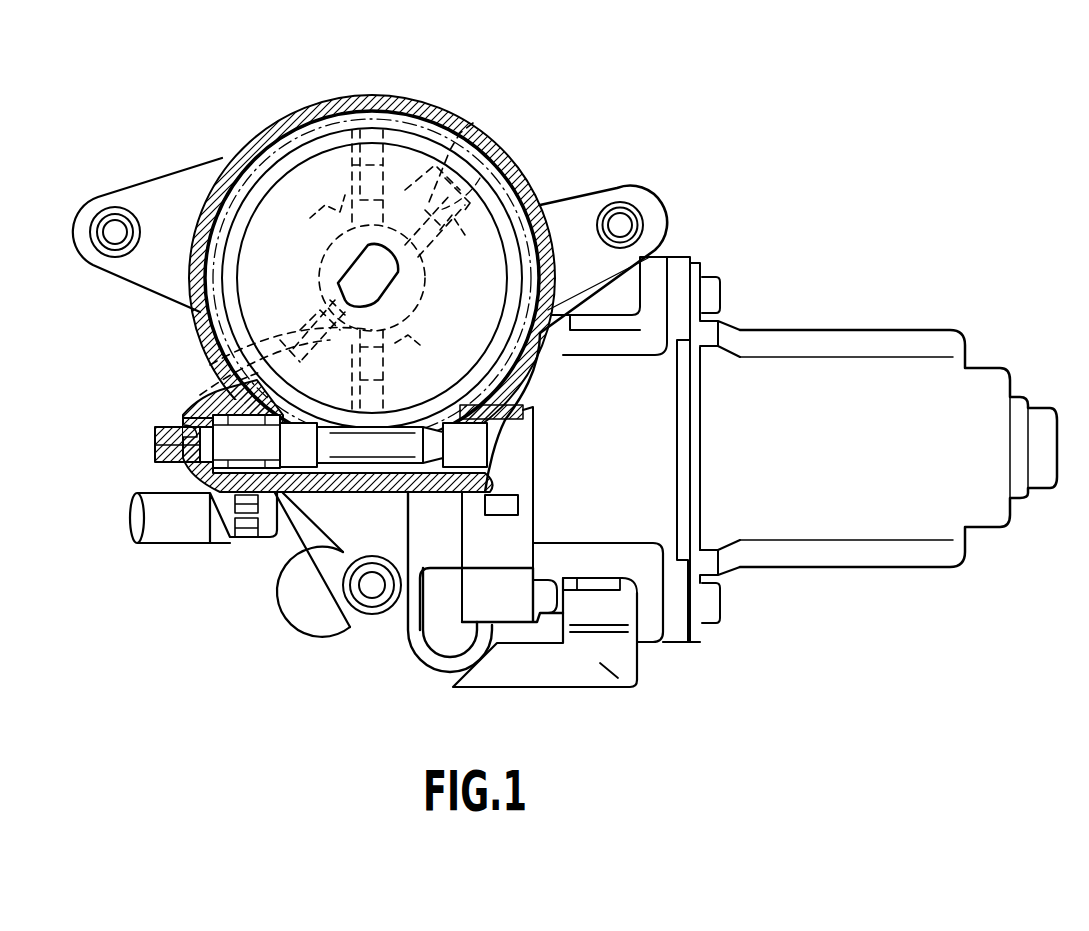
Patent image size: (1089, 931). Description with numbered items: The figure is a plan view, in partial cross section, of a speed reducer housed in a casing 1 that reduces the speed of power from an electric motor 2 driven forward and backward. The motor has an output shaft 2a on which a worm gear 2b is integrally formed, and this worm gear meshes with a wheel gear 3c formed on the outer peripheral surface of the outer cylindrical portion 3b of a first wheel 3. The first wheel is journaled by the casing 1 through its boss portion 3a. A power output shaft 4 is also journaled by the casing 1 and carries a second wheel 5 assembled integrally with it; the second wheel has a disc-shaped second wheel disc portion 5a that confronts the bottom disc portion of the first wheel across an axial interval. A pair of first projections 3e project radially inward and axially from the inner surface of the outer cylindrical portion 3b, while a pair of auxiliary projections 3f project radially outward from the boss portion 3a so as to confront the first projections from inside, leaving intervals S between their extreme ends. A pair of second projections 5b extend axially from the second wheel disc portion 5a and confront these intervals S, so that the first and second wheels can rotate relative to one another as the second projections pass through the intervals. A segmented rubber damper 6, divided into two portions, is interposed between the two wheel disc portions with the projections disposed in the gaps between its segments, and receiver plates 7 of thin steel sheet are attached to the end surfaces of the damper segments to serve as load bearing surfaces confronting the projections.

The casing 1 is at (336, 96).
The electric motor 2 is at (845, 375).
The output shaft 2a is at (450, 492).
The worm gear 2b is at (285, 543).
The first wheel 3 is at (462, 165).
The boss portion 3a is at (340, 258).
The outer cylindrical portion 3b is at (493, 188).
The wheel gear 3c is at (228, 378).
The first projections 3e is at (372, 96).
The auxiliary projections 3f is at (250, 353).
The power output shaft 4 is at (380, 282).
The second wheel 5 is at (298, 190).
The second wheel disc portion 5a is at (258, 303).
The second projections 5b is at (473, 125).
The rubber damper 6 is at (260, 243).
The receiver plates 7 is at (310, 218).
The intervals S is at (373, 183).